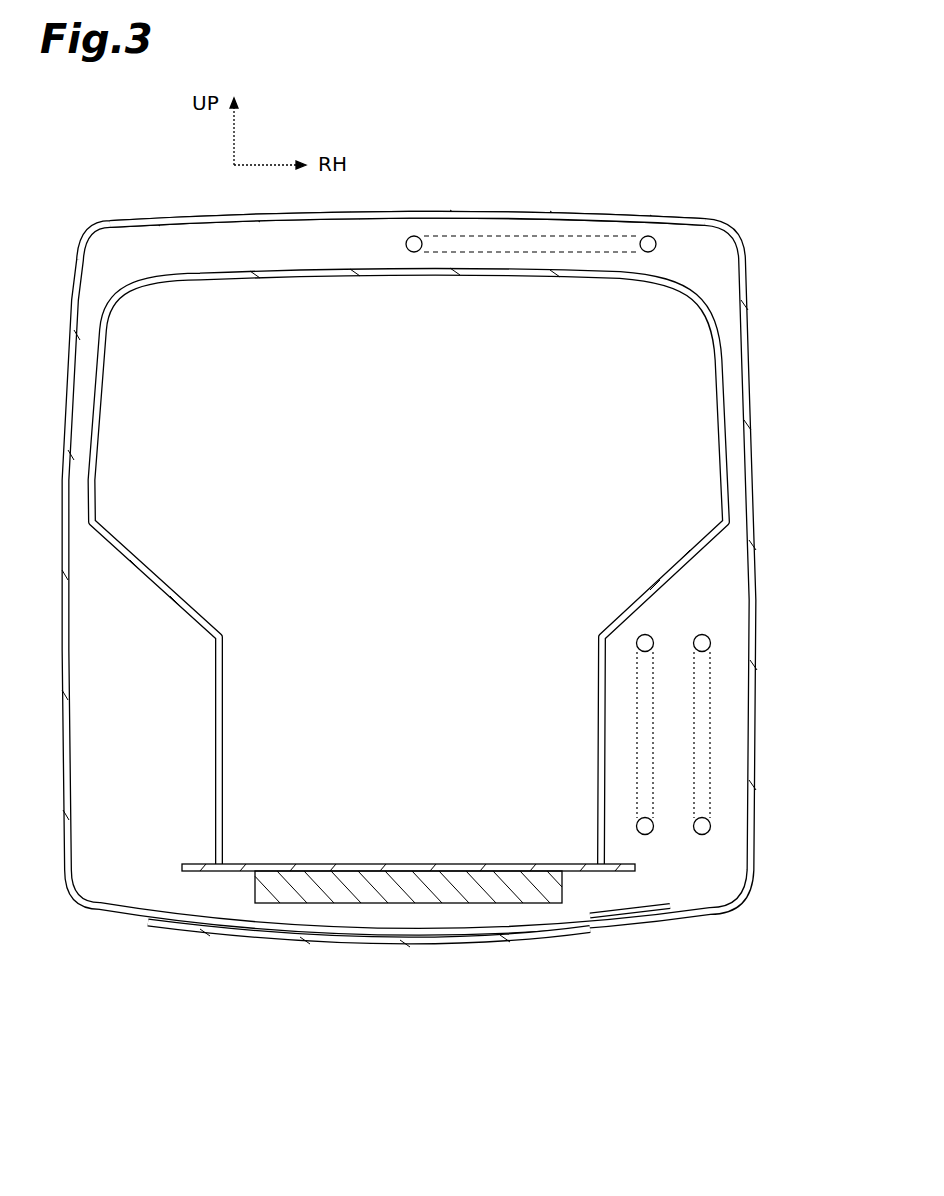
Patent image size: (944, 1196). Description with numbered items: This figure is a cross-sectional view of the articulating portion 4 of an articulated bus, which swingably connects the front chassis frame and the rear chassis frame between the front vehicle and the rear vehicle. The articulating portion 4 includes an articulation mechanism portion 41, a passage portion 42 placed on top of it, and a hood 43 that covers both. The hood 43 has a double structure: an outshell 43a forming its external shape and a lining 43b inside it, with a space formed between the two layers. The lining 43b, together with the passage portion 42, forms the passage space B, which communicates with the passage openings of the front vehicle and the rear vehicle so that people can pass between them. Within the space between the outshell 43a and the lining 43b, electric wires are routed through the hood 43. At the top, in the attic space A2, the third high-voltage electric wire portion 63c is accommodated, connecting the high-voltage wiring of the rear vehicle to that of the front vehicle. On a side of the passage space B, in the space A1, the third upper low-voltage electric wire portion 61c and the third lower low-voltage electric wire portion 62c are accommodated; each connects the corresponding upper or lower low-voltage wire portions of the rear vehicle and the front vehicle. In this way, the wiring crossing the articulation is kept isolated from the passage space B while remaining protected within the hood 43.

The articulating portion 4 is at (747, 199).
The articulation mechanism portion 41 is at (420, 904).
The passage portion 42 is at (378, 864).
The hood 43 is at (409, 580).
The outshell 43a is at (437, 211).
The lining 43b is at (401, 280).
The third upper low-voltage electric wire portion 61c is at (706, 636).
The third lower low-voltage electric wire portion 62c is at (638, 637).
The third high-voltage electric wire portion 63c is at (660, 229).
The space A1 is at (730, 619).
The space A2 is at (340, 255).
The passage space B is at (418, 580).